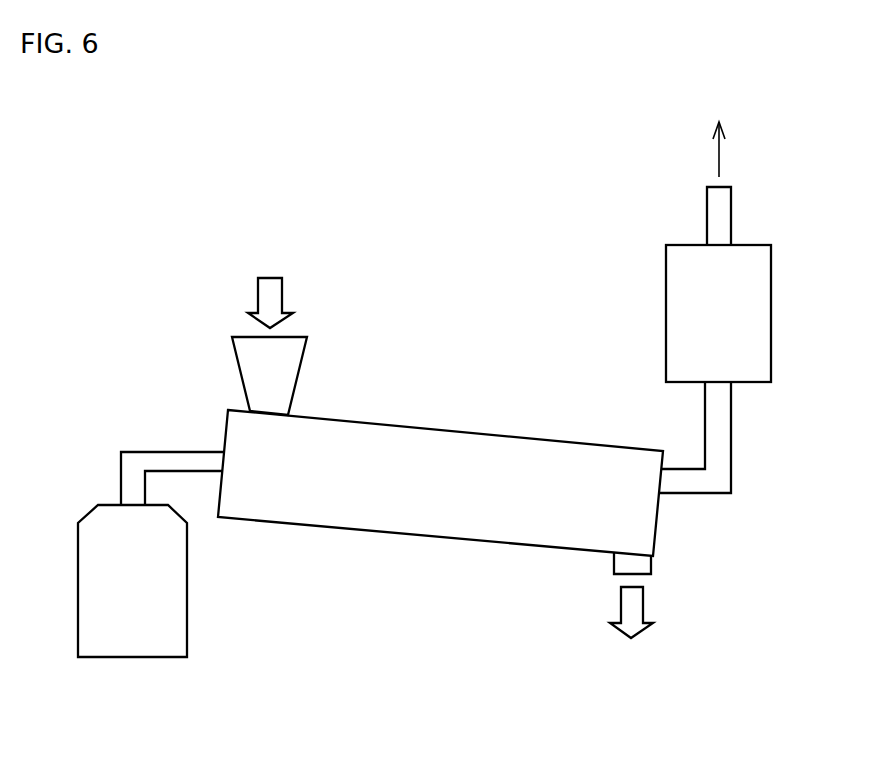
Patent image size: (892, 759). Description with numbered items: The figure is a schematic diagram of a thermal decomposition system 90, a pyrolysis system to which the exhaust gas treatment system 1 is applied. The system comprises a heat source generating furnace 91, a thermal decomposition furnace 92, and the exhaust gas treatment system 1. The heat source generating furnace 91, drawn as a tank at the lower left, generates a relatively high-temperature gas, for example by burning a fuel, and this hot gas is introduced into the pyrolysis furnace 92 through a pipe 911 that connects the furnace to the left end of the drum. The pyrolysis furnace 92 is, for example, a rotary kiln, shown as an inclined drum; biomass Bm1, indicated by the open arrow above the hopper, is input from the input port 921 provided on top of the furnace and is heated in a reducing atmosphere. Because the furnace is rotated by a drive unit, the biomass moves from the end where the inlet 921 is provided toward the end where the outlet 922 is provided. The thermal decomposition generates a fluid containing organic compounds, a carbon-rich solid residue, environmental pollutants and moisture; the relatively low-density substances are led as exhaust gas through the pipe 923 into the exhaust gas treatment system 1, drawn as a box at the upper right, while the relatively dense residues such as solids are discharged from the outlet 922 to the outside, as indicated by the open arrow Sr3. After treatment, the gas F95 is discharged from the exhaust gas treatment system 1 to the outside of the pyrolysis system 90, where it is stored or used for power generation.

The thermal decomposition system 90 is at (245, 210).
The heat source generating furnace 91 is at (133, 618).
The pipe 911 is at (170, 462).
The thermal decomposition furnace 92 is at (422, 508).
The input port 921 is at (283, 370).
The outlet 922 is at (634, 565).
The pipe 923 is at (718, 446).
The exhaust gas treatment system 1 is at (747, 335).
The biomass Bm1 is at (273, 297).
The open arrow Sr3 is at (632, 605).
The gas F95 is at (720, 155).